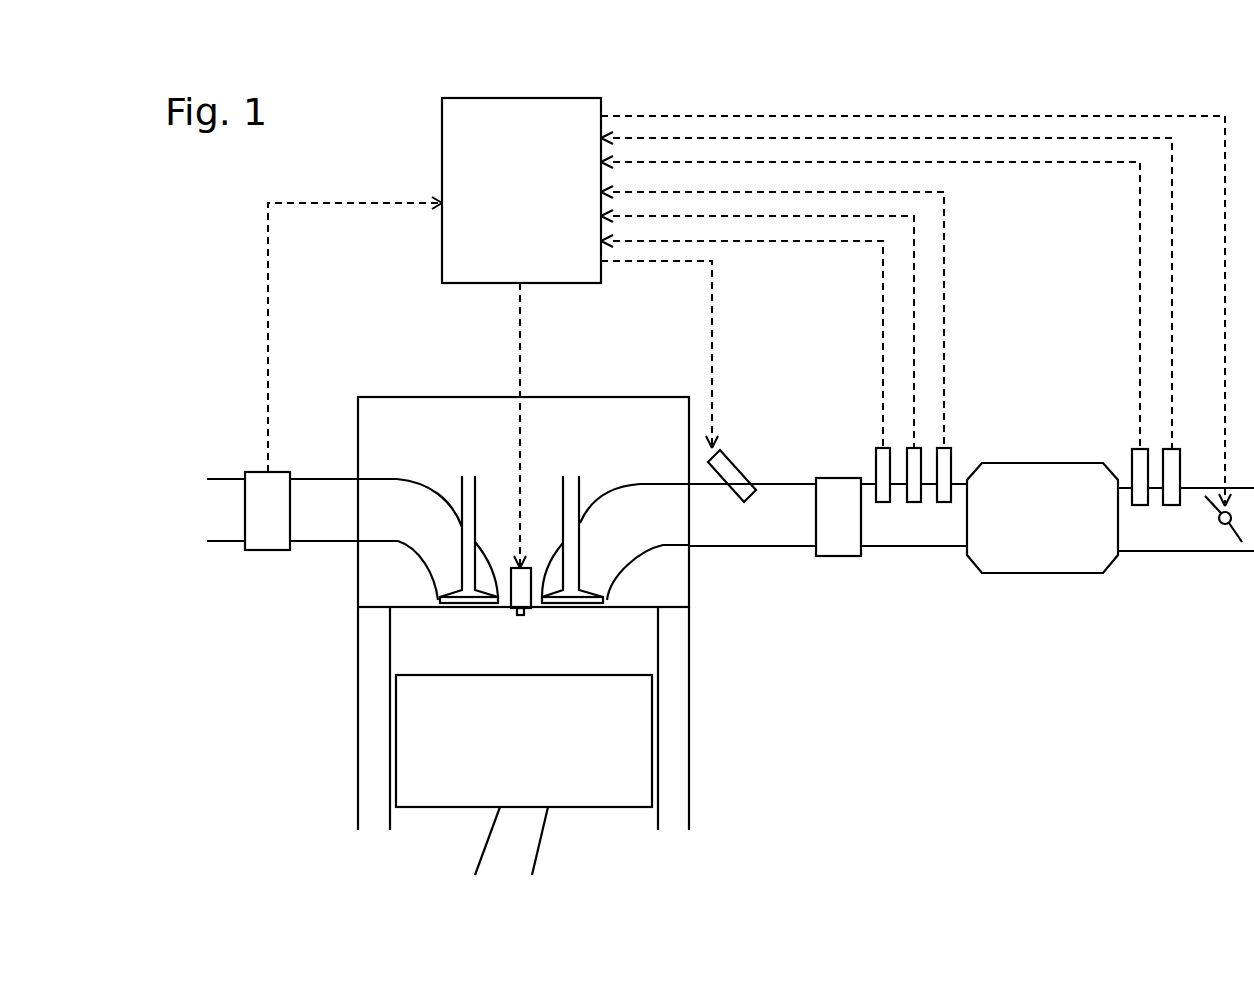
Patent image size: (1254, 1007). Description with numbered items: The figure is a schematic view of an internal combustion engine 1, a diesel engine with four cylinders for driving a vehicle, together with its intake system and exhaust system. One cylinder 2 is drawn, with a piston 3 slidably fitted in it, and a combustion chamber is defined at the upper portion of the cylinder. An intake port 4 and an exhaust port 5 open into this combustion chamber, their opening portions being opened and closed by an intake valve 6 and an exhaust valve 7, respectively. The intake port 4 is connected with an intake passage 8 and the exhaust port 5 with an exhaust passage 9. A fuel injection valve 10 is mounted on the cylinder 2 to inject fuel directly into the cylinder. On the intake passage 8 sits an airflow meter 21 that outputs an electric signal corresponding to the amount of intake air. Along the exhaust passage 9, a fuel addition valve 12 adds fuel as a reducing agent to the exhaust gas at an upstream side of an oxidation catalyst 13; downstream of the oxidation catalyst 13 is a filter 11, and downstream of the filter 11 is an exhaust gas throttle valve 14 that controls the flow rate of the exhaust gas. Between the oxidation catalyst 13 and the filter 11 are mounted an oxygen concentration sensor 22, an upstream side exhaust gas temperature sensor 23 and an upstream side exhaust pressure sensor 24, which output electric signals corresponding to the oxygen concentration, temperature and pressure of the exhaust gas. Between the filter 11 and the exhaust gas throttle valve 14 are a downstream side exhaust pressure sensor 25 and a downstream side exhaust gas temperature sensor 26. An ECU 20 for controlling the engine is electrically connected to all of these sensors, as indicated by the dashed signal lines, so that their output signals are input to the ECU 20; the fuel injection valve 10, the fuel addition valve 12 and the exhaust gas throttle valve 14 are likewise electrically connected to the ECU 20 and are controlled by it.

The internal combustion engine 1 is at (422, 368).
The cylinder 2 is at (655, 640).
The piston 3 is at (652, 760).
The intake port 4 is at (398, 480).
The exhaust port 5 is at (640, 484).
The intake valve 6 is at (462, 490).
The exhaust valve 7 is at (583, 490).
The intake passage 8 is at (333, 478).
The exhaust passage 9 is at (725, 547).
The fuel injection valve 10 is at (538, 593).
The filter 11 is at (1010, 573).
The fuel addition valve 12 is at (728, 458).
The oxidation catalyst 13 is at (838, 557).
The exhaust gas throttle valve 14 is at (1223, 526).
The ECU 20 is at (442, 176).
The airflow meter 21 is at (268, 550).
The oxygen concentration sensor 22 is at (876, 462).
The upstream side exhaust gas temperature sensor 23 is at (903, 494).
The upstream side exhaust pressure sensor 24 is at (951, 467).
The downstream side exhaust pressure sensor 25 is at (1132, 470).
The downstream side exhaust gas temperature sensor 26 is at (1180, 470).